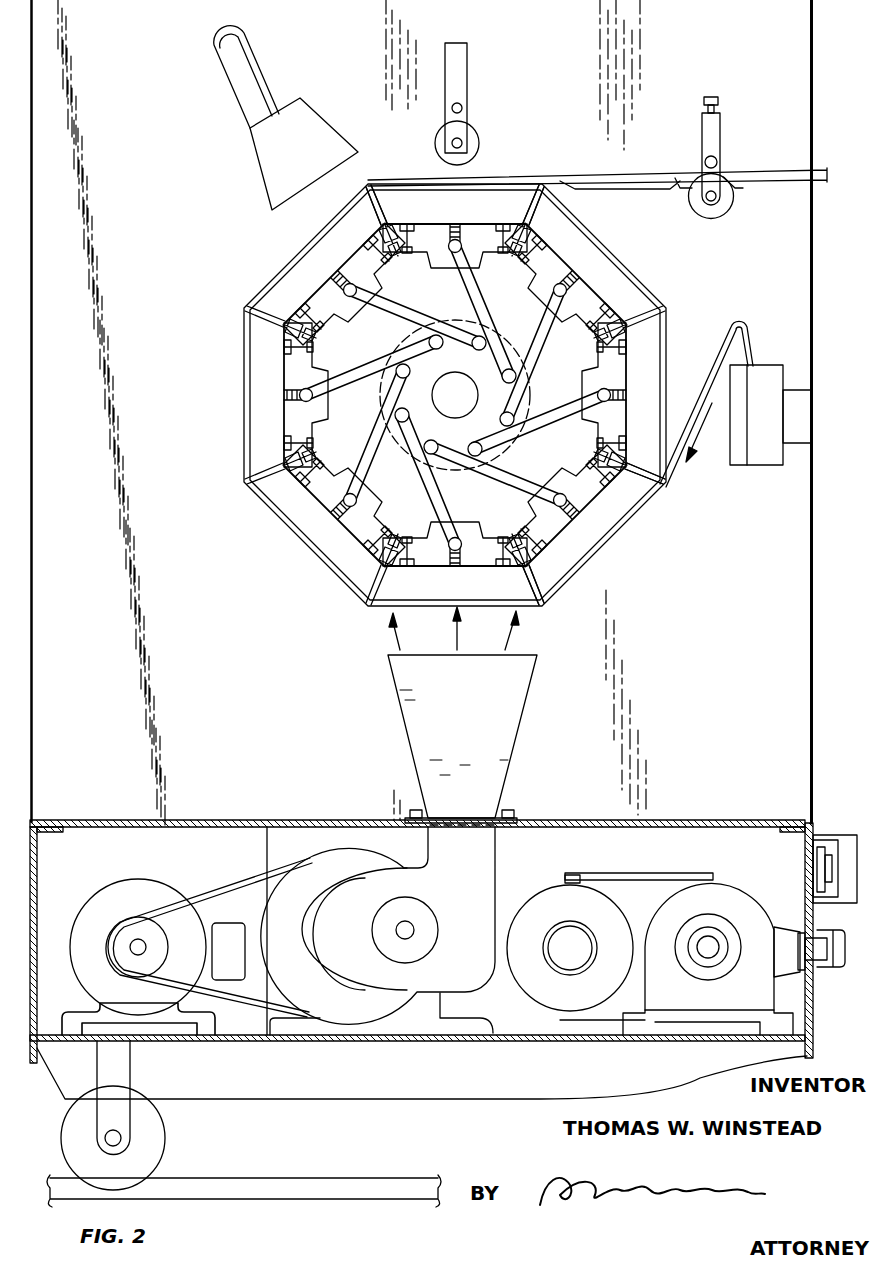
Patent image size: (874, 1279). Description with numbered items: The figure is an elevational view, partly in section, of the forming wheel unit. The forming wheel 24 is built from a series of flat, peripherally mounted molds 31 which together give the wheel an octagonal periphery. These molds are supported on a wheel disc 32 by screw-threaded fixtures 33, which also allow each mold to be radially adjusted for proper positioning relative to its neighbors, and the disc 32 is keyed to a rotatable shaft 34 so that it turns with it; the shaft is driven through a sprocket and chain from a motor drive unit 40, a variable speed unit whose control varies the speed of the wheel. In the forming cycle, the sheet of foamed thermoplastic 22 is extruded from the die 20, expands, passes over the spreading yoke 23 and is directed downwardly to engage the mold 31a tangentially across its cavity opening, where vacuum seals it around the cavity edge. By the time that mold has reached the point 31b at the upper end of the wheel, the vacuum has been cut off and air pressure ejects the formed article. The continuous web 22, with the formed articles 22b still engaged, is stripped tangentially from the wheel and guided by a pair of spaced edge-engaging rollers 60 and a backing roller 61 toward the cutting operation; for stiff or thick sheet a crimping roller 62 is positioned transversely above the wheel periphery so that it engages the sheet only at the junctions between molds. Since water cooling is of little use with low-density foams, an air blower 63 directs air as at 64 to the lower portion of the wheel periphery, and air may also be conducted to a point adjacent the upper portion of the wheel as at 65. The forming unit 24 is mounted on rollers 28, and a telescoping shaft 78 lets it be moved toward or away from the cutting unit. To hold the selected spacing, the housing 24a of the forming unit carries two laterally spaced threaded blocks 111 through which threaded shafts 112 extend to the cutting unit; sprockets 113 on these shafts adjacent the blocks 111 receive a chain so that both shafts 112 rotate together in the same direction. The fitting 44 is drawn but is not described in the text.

The die 20 is at (768, 462).
The sheet of foamed thermoplastic 22 is at (523, 177).
The formed articles 22b is at (620, 181).
The spreading yoke 23 is at (750, 371).
The forming wheel 24 is at (289, 539).
The housing of the forming unit 24a is at (800, 822).
The rollers 28 is at (152, 1147).
The molds 31 is at (610, 265).
The mold 31a is at (612, 523).
The point at upper end of wheel 31b is at (412, 192).
The wheel disc 32 is at (555, 451).
The screw-threaded fixtures 33 is at (491, 233).
The rotatable shaft 34 is at (467, 406).
The motor drive unit 40 is at (718, 886).
The tube fitting 44 is at (510, 334).
The edge-engaging rollers 60 is at (731, 207).
The backing roller 61 is at (722, 157).
The crimping roller 62 is at (472, 146).
The air blower 63 is at (483, 900).
The air directed to lower wheel periphery 64 is at (469, 751).
The air conducted to upper wheel portion 65 is at (309, 154).
The telescoping shaft 78 is at (821, 960).
The threaded blocks 111 is at (847, 835).
The threaded shafts 112 is at (806, 867).
The sprockets 113 is at (806, 847).